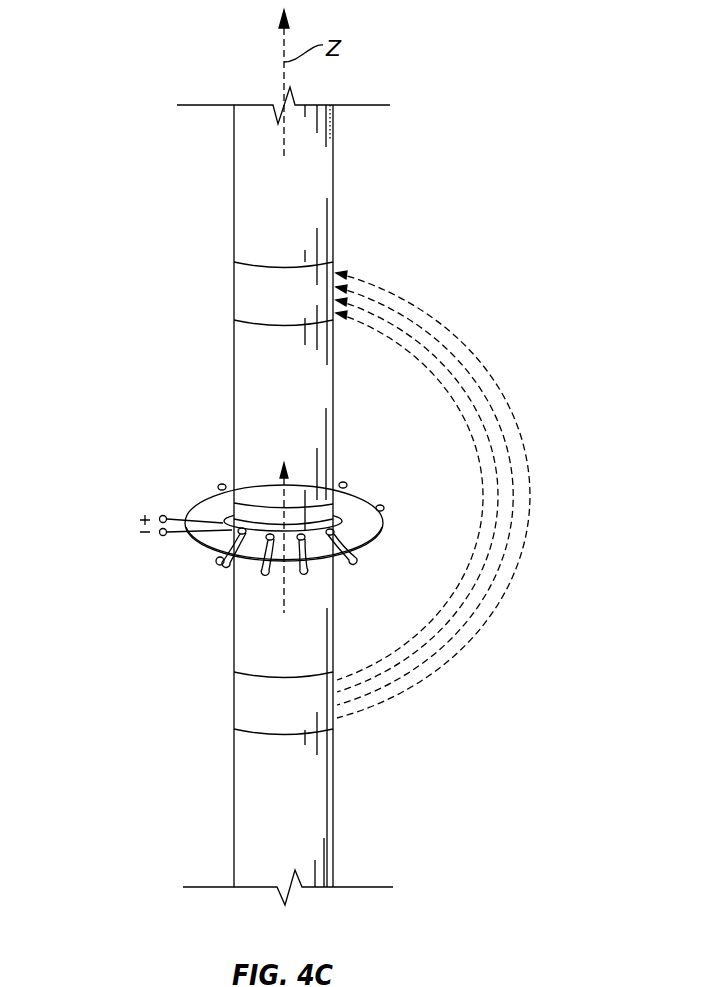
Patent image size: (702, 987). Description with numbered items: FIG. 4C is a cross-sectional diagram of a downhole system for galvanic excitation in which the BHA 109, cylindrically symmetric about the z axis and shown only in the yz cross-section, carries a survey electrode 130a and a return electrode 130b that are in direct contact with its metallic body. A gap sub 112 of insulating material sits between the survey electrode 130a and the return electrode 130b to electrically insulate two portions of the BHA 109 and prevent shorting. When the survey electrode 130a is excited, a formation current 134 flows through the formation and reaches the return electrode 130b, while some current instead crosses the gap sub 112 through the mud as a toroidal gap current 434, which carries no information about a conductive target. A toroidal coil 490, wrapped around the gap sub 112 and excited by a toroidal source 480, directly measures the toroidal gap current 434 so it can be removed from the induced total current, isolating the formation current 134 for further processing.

The BHA 109 is at (250, 191).
The return electrode 130b is at (234, 290).
The survey electrode 130a is at (234, 700).
The formation current 134 is at (528, 497).
The toroidal gap current 434 is at (285, 489).
The gap sub 112 is at (258, 513).
The toroidal source 480 is at (133, 513).
The toroidal coil 490 is at (224, 566).